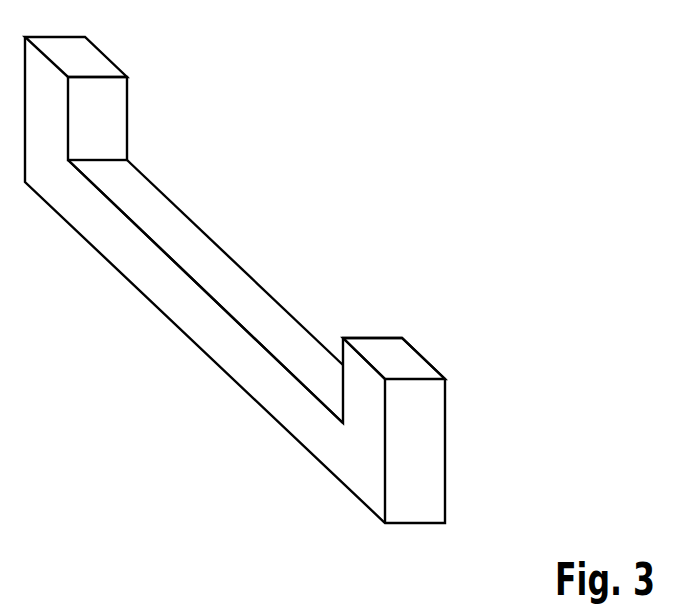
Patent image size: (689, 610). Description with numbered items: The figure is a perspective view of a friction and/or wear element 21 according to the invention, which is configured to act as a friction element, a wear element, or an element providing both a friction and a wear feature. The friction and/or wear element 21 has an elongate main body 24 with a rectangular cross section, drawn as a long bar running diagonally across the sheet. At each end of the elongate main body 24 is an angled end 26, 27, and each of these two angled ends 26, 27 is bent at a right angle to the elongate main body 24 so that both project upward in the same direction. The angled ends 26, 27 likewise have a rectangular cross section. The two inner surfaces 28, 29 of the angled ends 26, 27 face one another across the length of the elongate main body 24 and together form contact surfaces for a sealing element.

The friction and/or wear element 21 is at (229, 227).
The elongate main body 24 is at (195, 313).
The angled end 26 is at (83, 57).
The angled end 27 is at (398, 362).
The inner surface 28 is at (100, 113).
The inner surface 29 is at (376, 332).